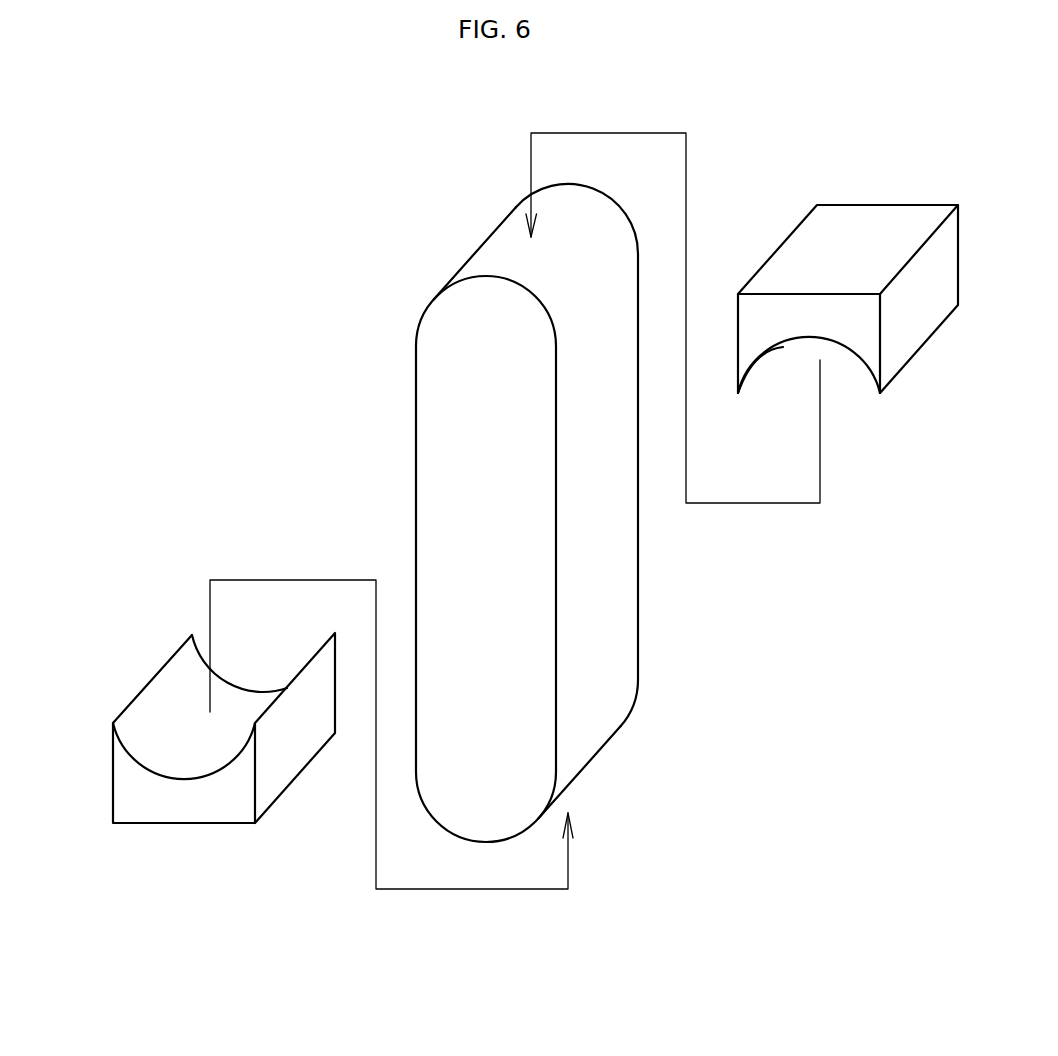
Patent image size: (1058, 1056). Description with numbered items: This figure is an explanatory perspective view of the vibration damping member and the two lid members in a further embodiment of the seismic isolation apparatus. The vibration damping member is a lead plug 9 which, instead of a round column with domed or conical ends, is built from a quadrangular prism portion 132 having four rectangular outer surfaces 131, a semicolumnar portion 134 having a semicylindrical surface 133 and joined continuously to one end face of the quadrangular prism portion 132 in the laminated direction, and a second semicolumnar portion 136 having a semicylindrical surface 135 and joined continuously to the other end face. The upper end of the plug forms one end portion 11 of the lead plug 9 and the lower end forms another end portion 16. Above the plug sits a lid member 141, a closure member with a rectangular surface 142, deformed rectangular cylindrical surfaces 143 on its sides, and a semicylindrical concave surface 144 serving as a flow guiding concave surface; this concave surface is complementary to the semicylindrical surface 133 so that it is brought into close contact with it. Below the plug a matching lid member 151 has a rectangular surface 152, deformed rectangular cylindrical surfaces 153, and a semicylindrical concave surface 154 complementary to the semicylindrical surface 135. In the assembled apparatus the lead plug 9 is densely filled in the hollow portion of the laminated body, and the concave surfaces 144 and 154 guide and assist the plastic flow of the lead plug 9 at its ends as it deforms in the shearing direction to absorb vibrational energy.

The lead plug 9 is at (396, 407).
The one end portion 11 is at (510, 222).
The another end portion 16 is at (482, 824).
The rectangular outer surfaces 131 is at (440, 466).
The quadrangular prism portion 132 is at (608, 637).
The semicylindrical surface 133 is at (497, 253).
The semicolumnar portion 134 is at (457, 310).
The semicylindrical surface 135 is at (580, 785).
The semicolumnar portion 136 is at (603, 737).
The lid member 141 is at (885, 182).
The rectangular surface 142 is at (798, 245).
The deformed rectangular cylindrical surfaces 143 is at (931, 326).
The semicylindrical concave surface 144 is at (855, 356).
The lid member 151 is at (93, 784).
The rectangular surface 152 is at (203, 824).
The deformed rectangular cylindrical surfaces 153 is at (272, 788).
The semicylindrical concave surface 154 is at (156, 705).